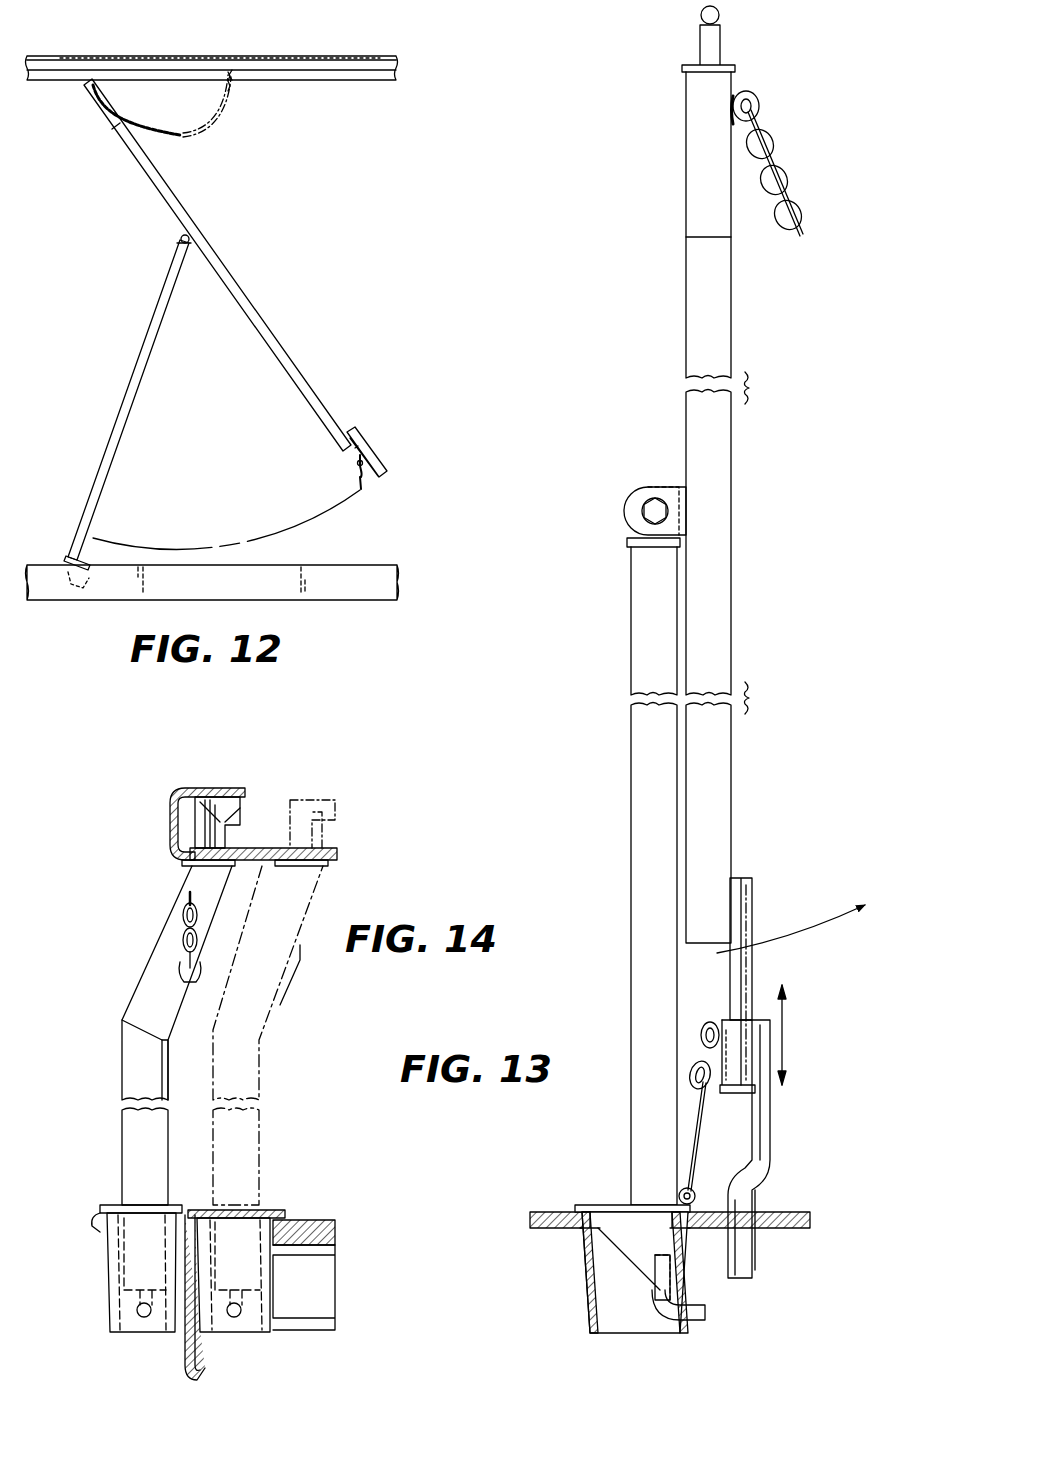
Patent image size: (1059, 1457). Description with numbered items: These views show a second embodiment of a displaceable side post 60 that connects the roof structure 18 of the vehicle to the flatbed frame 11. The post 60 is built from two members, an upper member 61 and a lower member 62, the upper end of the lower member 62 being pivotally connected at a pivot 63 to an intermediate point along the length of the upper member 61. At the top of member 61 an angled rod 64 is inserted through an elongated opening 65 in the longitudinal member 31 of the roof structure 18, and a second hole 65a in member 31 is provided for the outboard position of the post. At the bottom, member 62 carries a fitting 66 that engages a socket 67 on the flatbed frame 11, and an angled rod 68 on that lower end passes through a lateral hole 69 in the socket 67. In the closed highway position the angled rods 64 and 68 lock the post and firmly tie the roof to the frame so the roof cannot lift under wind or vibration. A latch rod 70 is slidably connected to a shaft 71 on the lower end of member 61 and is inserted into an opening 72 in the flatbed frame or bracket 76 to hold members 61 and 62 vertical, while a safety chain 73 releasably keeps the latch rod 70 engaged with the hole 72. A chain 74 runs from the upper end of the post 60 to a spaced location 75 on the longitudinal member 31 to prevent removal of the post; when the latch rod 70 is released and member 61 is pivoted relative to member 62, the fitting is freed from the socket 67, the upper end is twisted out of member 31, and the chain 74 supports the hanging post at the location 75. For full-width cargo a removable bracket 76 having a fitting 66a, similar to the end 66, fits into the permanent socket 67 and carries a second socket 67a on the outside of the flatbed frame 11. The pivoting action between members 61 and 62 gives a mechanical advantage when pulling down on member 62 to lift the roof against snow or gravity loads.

In FIG. 12, the flatbed frame 11 is at (353, 564).
In FIG. 13, the flatbed frame 11 is at (543, 1208).
In FIG. 12, the roof structure 18 is at (385, 51).
In FIG. 12, the longitudinal member 31 is at (322, 56).
In FIG. 14, the longitudinal member 31 is at (220, 788).
In FIG. 12, the side post 60 is at (235, 265).
In FIG. 13, the side post 60 is at (740, 560).
In FIG. 12, the upper post member 61 is at (294, 362).
In FIG. 13, the upper post member 61 is at (731, 759).
In FIG. 14, the upper post member 61 is at (268, 1035).
In FIG. 12, the lower post member 62 is at (150, 328).
In FIG. 13, the lower post member 62 is at (631, 830).
In FIG. 14, the lower post member 62 is at (177, 1035).
In FIG. 12, the pivot connection 63 is at (184, 239).
In FIG. 13, the pivot connection 63 is at (645, 492).
In FIG. 13, the angled rod 64 is at (698, 17).
In FIG. 14, the angled rod 64 is at (240, 801).
In FIG. 14, the elongated opening 65 is at (318, 854).
In FIG. 14, the second hole 65a is at (188, 866).
In FIG. 13, the fitting 66 is at (627, 1221).
In FIG. 14, the bracket fitting 66a is at (272, 1210).
In FIG. 13, the socket 67 is at (596, 1292).
In FIG. 14, the socket 67 is at (270, 1333).
In FIG. 14, the second socket 67a is at (110, 1295).
In FIG. 13, the angled rod 68 is at (658, 1315).
In FIG. 13, the lateral hole 69 is at (692, 1300).
In FIG. 13, the latch rod 70 is at (771, 1128).
In FIG. 13, the shaft 71 is at (753, 969).
In FIG. 13, the opening 72 is at (750, 1207).
In FIG. 12, the safety chain 73 is at (355, 458).
In FIG. 13, the safety chain 73 is at (685, 1072).
In FIG. 12, the chain 74 is at (228, 92).
In FIG. 13, the chain 74 is at (775, 147).
In FIG. 14, the chain 74 is at (182, 921).
In FIG. 12, the spaced location 75 is at (233, 72).
In FIG. 14, the bracket 76 is at (96, 1220).